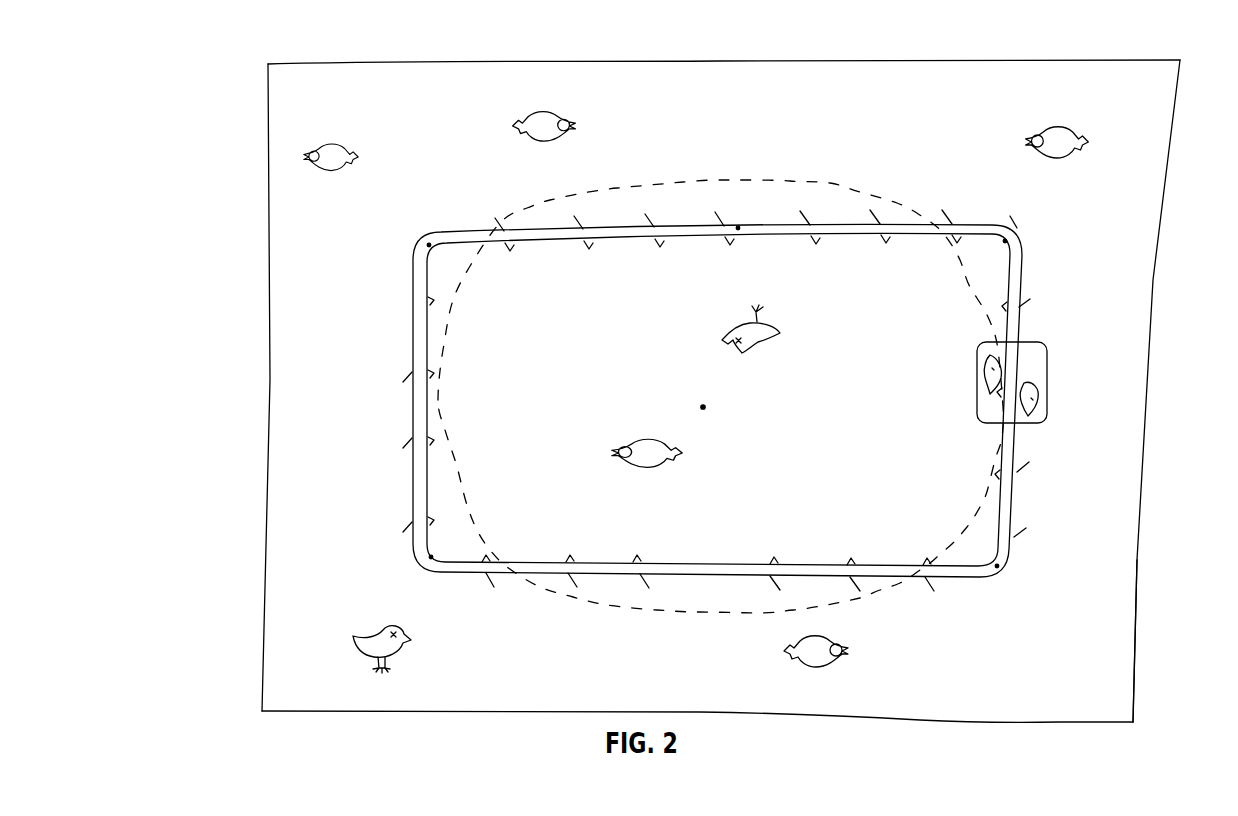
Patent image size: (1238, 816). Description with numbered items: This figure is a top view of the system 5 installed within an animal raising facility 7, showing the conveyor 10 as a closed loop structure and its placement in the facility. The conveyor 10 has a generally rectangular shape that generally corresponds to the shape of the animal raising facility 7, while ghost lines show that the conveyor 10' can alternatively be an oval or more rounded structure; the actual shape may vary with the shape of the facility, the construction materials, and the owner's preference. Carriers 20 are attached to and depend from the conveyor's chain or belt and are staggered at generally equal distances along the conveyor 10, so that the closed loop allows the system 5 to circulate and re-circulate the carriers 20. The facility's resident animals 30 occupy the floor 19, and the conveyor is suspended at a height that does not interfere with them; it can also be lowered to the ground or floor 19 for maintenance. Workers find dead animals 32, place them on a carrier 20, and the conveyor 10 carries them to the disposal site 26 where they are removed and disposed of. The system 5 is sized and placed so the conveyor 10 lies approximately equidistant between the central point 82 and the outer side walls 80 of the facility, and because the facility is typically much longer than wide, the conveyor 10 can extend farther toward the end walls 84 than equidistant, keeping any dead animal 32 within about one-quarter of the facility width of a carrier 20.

The system 5 is at (1116, 210).
The animal raising facility 7 is at (1136, 537).
The conveyor 10 is at (748, 400).
The conveyor 10' is at (720, 374).
The ground or floor 19 is at (1074, 658).
The carriers 20 is at (413, 300).
The disposal site 26 is at (1044, 384).
The resident animals 30 is at (553, 124).
The dead animals 32 is at (722, 336).
The outer side walls 80 is at (713, 58).
The central point 82 is at (705, 406).
The end walls 84 is at (270, 384).